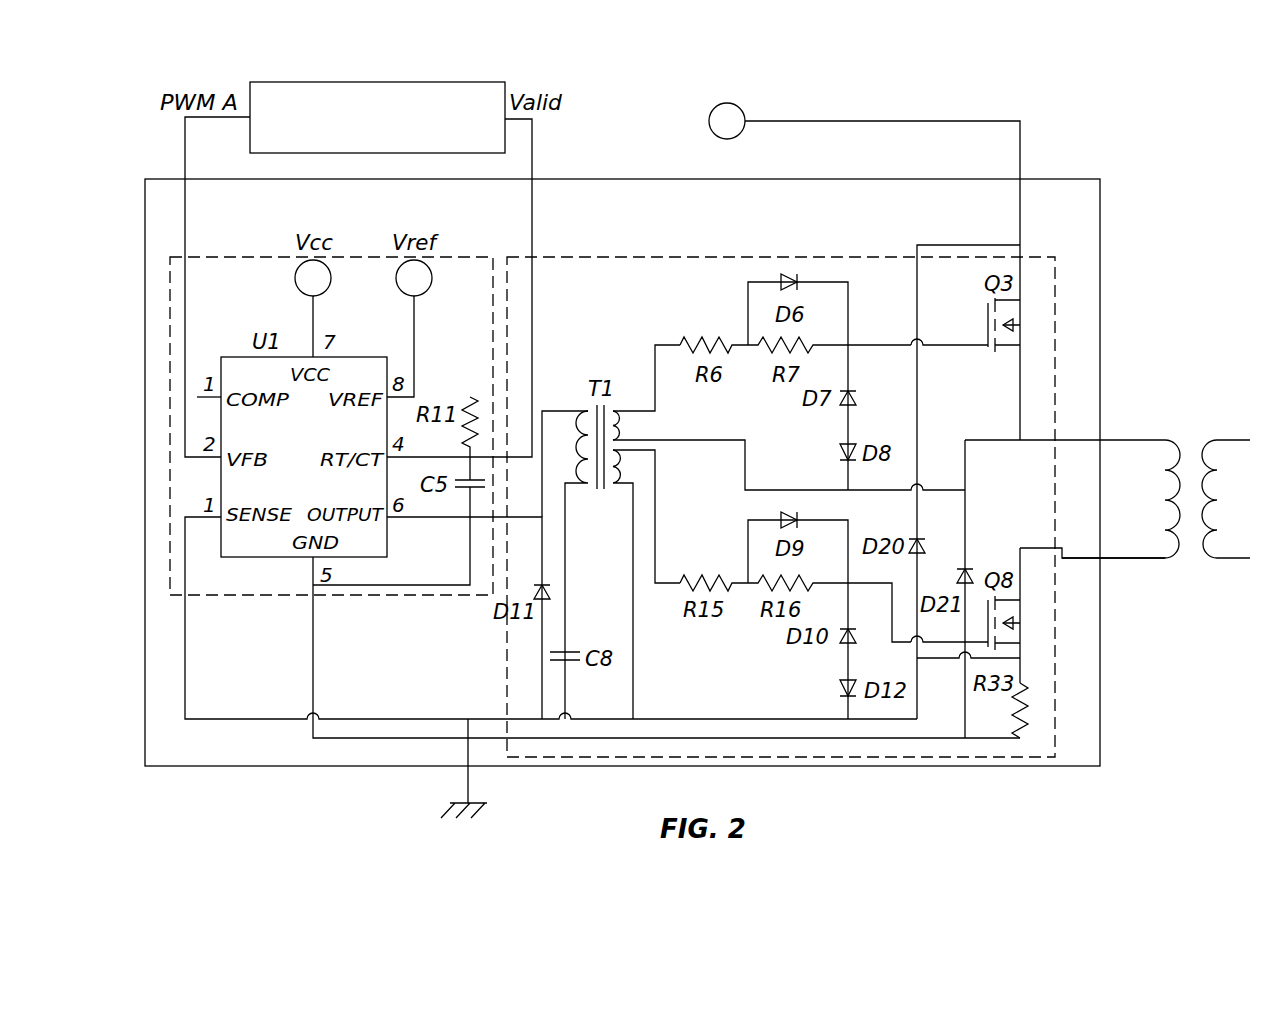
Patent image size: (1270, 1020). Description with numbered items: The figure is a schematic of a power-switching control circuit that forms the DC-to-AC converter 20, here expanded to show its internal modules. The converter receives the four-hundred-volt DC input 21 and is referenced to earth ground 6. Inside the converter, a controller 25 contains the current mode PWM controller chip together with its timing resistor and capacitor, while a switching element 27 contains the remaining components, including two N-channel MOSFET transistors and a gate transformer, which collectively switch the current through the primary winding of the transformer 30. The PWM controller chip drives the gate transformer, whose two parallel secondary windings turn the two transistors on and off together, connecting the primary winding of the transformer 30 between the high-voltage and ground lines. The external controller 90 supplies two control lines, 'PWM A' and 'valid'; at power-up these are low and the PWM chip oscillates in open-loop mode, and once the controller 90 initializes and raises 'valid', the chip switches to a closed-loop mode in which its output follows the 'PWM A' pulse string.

The DC-to-AC converter 20 is at (775, 179).
The controller 90 is at (268, 82).
The controller 25 is at (262, 257).
The switching element 27 is at (797, 257).
The +400 VDC input 21 is at (727, 103).
The transformer 30 is at (1189, 438).
The earth ground 6 is at (445, 812).